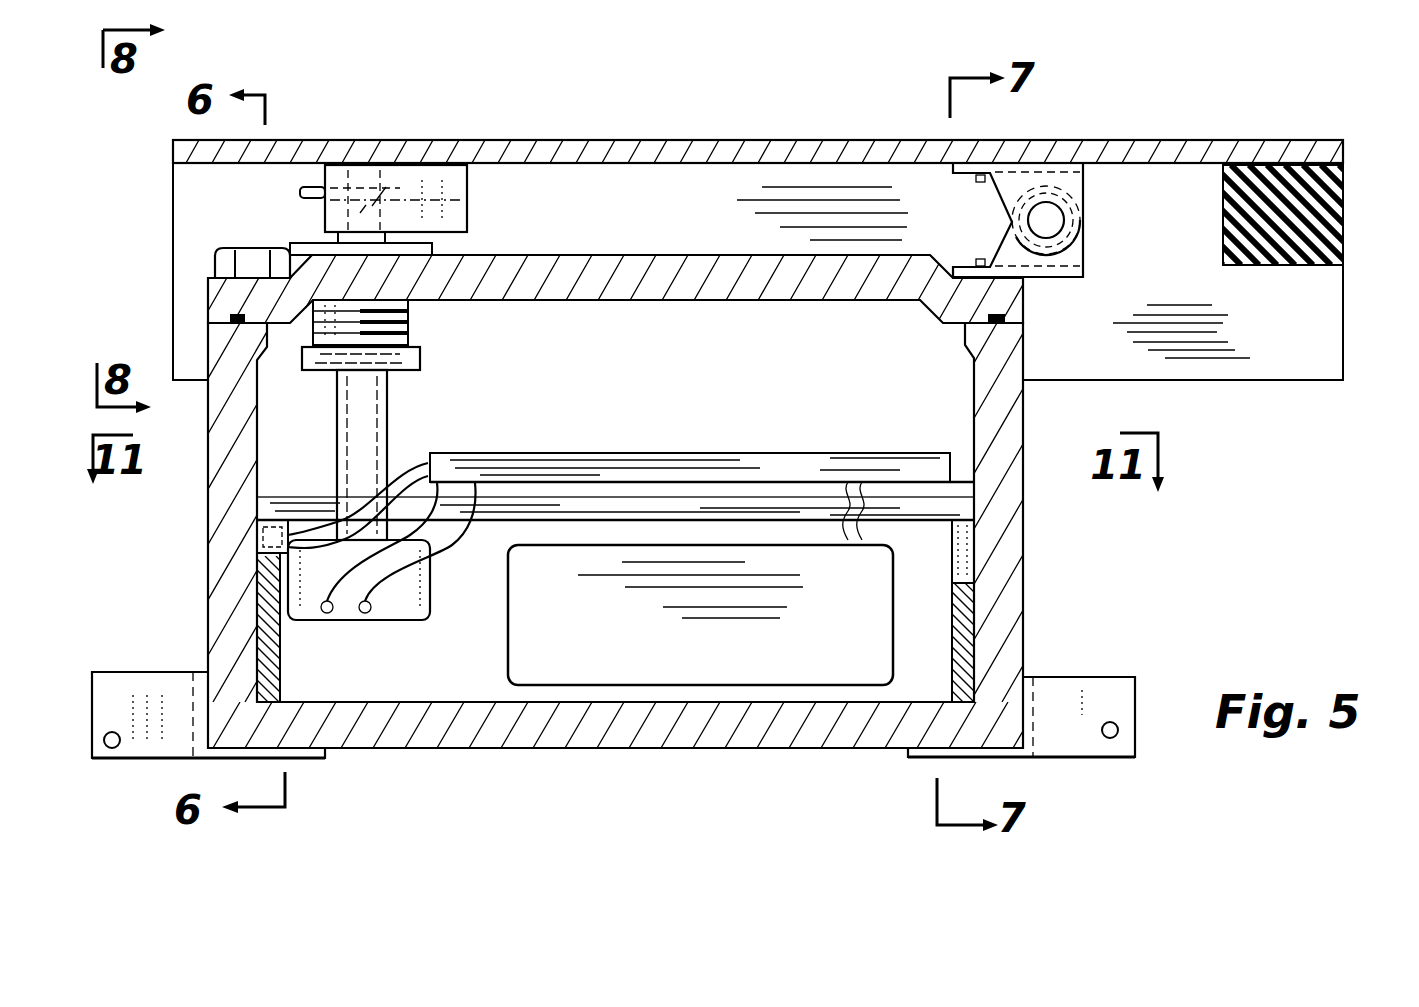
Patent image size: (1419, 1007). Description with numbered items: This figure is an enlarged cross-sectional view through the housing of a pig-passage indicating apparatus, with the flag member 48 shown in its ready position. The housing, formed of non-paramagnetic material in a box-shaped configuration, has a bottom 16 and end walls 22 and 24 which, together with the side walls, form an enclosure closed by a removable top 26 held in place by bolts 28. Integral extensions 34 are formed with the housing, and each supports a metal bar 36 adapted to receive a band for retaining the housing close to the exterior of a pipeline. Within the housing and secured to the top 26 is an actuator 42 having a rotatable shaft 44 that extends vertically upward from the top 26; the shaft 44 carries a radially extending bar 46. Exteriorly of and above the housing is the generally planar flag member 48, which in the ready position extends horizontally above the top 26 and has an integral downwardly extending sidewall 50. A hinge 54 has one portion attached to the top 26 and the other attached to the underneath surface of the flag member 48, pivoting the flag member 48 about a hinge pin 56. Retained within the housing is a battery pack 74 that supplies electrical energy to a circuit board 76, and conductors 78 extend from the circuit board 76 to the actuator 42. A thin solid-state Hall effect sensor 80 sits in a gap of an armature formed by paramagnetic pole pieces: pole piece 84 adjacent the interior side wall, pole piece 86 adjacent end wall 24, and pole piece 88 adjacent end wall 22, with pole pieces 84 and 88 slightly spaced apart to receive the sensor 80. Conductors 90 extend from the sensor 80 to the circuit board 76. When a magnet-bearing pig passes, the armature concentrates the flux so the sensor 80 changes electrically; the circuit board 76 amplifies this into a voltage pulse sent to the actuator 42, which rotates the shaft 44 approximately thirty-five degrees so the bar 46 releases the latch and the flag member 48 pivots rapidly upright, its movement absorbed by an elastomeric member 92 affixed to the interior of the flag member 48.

The bottom 16 is at (725, 735).
The end wall 22 is at (232, 545).
The end wall 24 is at (1000, 453).
The removable top 26 is at (568, 272).
The bolts 28 is at (247, 245).
The integral extensions 34 is at (120, 685).
The metal bar 36 is at (114, 748).
The actuator 42 is at (432, 389).
The rotatable shaft 44 is at (405, 160).
The radially extending bar 46 is at (313, 184).
The flag member 48 is at (840, 150).
The sidewall 50 is at (1310, 335).
The hinge 54 is at (1068, 182).
The hinge pin 56 is at (1052, 222).
The battery pack 74 is at (612, 662).
The circuit board 76 is at (800, 463).
The conductors 78 is at (427, 530).
The Hall effect sensor 80 is at (272, 535).
The pole piece 84 is at (735, 507).
The pole piece 86 is at (990, 605).
The pole piece 88 is at (265, 625).
The conductors 90 is at (392, 465).
The elastomeric member 92 is at (1318, 210).